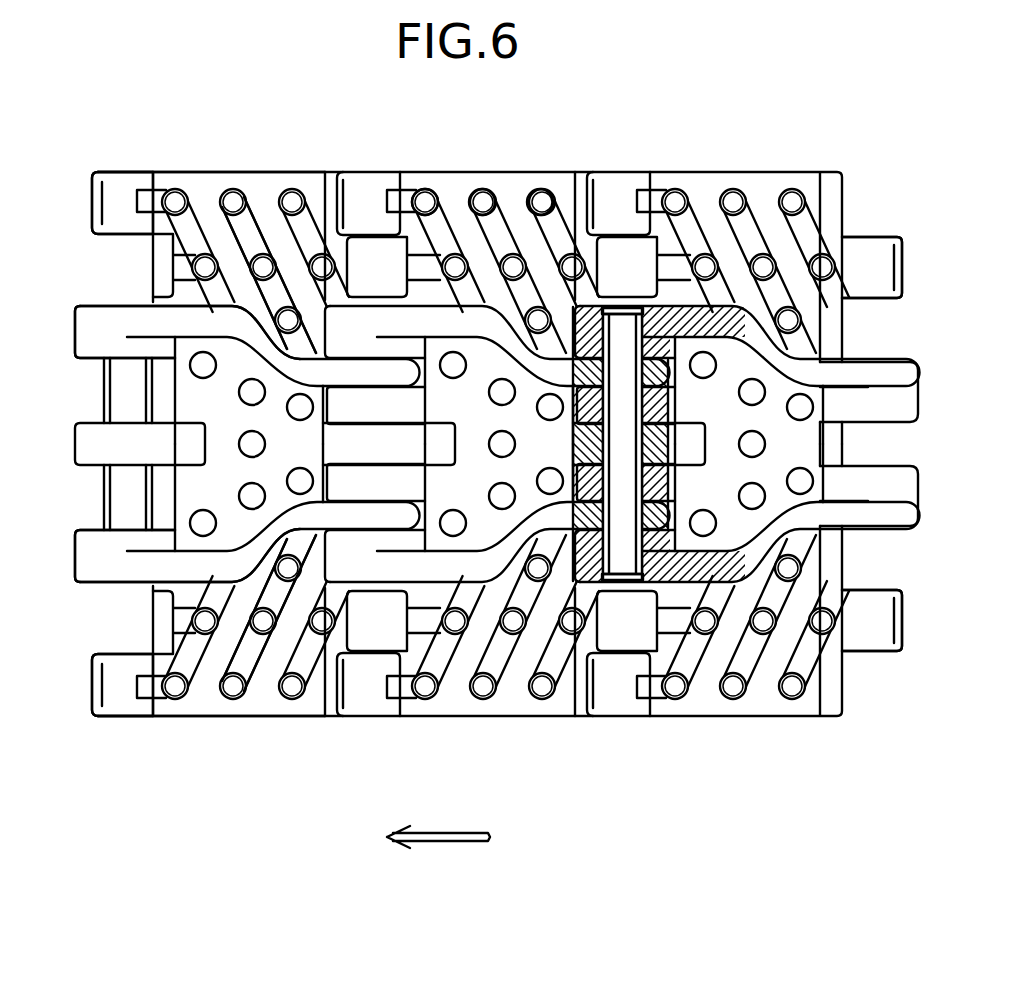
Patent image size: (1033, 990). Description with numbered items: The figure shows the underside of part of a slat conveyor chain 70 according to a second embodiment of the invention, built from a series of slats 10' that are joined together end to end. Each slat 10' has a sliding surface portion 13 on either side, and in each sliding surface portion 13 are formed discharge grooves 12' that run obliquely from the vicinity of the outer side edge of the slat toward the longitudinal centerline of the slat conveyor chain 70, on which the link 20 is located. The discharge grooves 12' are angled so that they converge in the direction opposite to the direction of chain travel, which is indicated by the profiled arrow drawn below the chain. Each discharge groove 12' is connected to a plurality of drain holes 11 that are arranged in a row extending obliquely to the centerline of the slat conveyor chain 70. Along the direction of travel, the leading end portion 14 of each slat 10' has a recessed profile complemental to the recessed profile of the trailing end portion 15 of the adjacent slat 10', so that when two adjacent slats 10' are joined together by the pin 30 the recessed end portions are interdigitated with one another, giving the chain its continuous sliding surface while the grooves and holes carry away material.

The slat conveyor chain 70 is at (476, 438).
The slat 10' is at (476, 459).
The drain holes 11 is at (425, 200).
The discharge grooves 12' is at (268, 459).
The sliding surface portion 13 is at (205, 185).
The leading end portion 14 is at (85, 175).
The trailing end portion 15 is at (902, 262).
The link 20 is at (95, 552).
The pin 30 is at (619, 323).